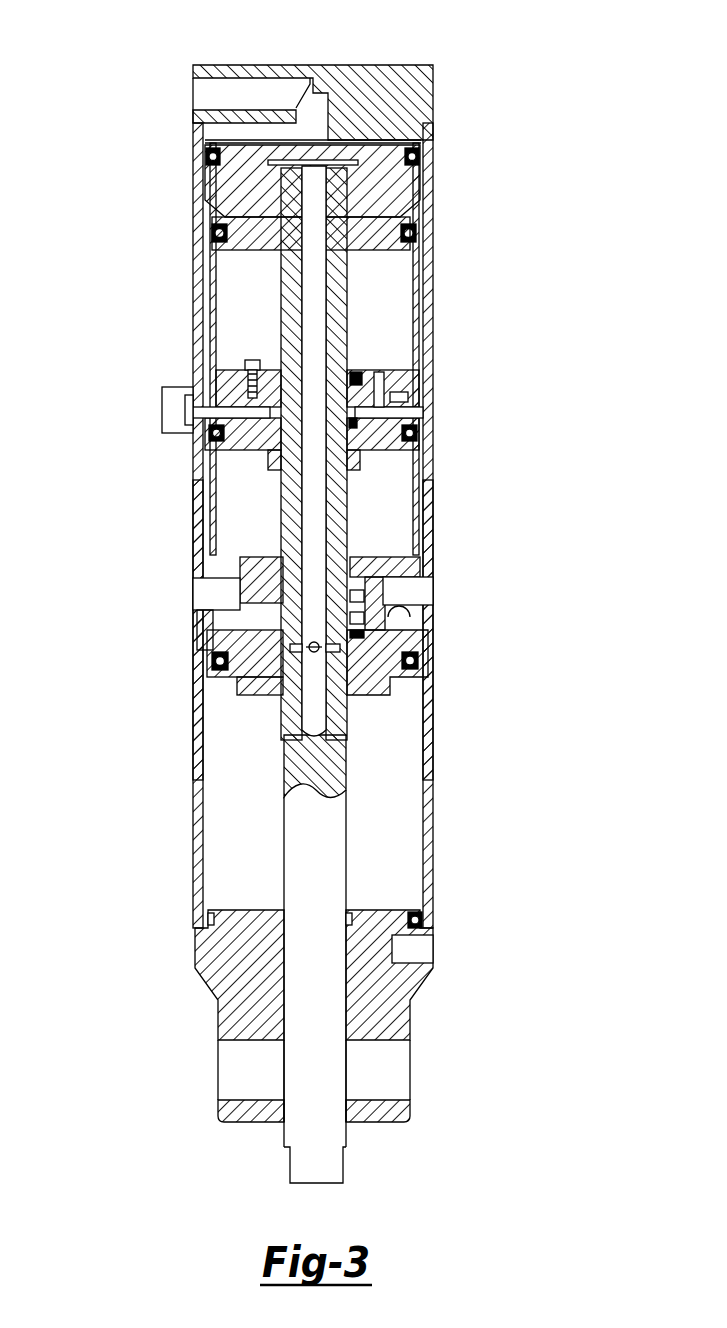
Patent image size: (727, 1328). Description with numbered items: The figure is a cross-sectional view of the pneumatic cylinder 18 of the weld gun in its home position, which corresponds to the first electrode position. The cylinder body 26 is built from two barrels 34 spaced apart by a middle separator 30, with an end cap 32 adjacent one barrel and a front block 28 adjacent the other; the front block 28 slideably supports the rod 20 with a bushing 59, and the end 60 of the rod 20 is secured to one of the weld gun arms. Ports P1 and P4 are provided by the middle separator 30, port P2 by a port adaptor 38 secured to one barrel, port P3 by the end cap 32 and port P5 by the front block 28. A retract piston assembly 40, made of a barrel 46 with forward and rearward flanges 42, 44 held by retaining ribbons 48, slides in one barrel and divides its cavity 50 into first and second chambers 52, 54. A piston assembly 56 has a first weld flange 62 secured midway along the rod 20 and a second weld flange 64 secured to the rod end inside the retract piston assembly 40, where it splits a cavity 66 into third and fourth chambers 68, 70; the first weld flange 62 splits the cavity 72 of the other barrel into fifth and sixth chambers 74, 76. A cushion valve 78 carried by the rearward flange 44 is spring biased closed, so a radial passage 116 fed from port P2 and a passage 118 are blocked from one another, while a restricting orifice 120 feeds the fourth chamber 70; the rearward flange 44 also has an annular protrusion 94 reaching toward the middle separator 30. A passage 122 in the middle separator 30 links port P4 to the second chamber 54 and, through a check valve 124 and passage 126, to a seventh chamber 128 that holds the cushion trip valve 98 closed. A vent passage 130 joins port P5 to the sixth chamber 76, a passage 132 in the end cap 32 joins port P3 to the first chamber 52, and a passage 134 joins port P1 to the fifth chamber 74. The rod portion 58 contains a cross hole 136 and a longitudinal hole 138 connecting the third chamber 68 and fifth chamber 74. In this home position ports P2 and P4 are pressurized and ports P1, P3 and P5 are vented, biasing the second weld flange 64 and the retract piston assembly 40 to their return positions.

The pneumatic cylinder 18 is at (614, 262).
The rod 20 is at (306, 1068).
The cylinder body 26 is at (436, 772).
The front block 28 is at (402, 1010).
The middle separator 30 is at (412, 561).
The end cap 32 is at (436, 68).
The barrels 34 is at (432, 513).
The port adaptor 38 is at (200, 412).
The retract piston assembly 40 is at (426, 296).
The forward flange 42 is at (432, 178).
The rearward flange 44 is at (362, 394).
The barrel 46 is at (425, 354).
The retaining ribbons 48 is at (432, 196).
The cavity 50 is at (243, 490).
The first chamber 52 is at (314, 134).
The second chamber 54 is at (373, 518).
The piston assembly 56 is at (352, 486).
The portion 58 is at (337, 540).
The bushing 59 is at (366, 1076).
The end 60 is at (332, 1160).
The first weld flange 62 is at (400, 683).
The second weld flange 64 is at (432, 250).
The cavity 66 is at (378, 323).
The third chamber 68 is at (432, 142).
The fourth chamber 70 is at (366, 303).
The cavity 72 is at (388, 706).
The fifth chamber 74 is at (392, 624).
The sixth chamber 76 is at (373, 853).
The cushion valve 78 is at (358, 416).
The annular protrusion 94 is at (270, 462).
The cushion trip valve 98 is at (215, 582).
The radial passage 116 is at (246, 364).
The passage 118 is at (386, 377).
The restricting orifice 120 is at (410, 396).
The passage 122 is at (243, 570).
The check valve 124 is at (232, 622).
The passage 126 is at (246, 646).
The seventh chamber 128 is at (278, 690).
The vent passage 130 is at (428, 918).
The passage 132 is at (228, 90).
The passage 134 is at (432, 597).
The cross hole 136 is at (333, 656).
The longitudinal hole 138 is at (318, 752).
The port P1 is at (437, 598).
The port P2 is at (158, 411).
The port P3 is at (186, 76).
The port P4 is at (190, 598).
The port P5 is at (437, 950).